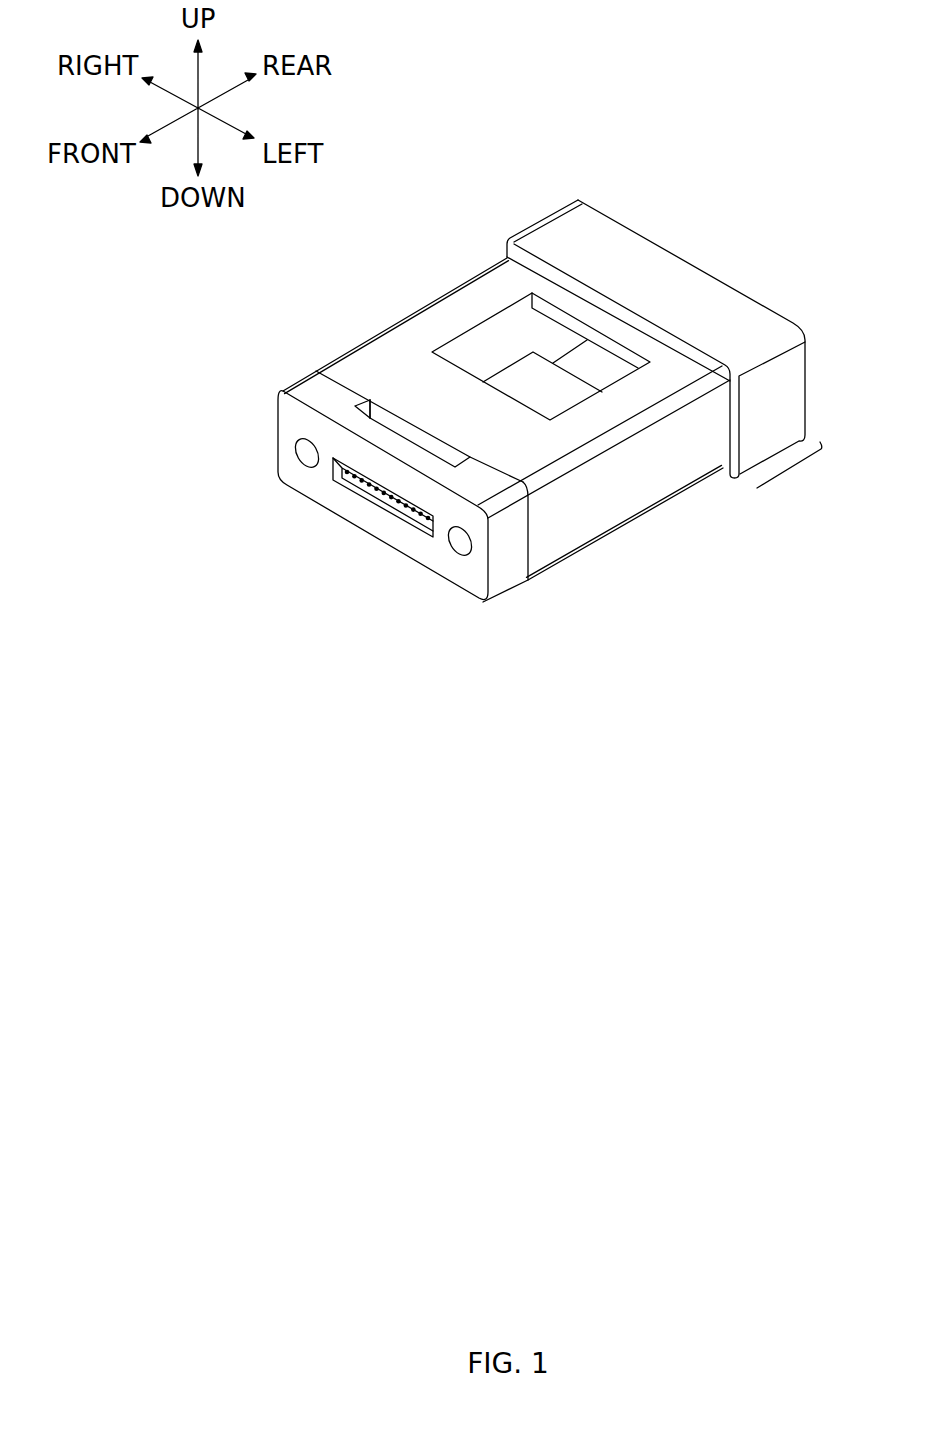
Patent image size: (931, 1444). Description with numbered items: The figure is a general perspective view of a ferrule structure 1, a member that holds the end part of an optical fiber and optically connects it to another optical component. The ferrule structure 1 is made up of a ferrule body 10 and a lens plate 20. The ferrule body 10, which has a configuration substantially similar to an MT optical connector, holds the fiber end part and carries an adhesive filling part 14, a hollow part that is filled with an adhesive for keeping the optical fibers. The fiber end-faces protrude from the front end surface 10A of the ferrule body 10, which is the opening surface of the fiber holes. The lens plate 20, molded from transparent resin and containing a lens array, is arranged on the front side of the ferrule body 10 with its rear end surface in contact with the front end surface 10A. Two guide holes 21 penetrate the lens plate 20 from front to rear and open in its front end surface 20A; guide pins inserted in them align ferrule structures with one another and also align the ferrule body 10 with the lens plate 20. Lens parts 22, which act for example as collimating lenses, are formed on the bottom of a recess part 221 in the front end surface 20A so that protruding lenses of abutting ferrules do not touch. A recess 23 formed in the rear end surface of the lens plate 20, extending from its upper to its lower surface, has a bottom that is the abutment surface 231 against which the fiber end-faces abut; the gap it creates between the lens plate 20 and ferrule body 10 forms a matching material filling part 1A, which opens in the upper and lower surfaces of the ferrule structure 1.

The ferrule structure 1 is at (401, 231).
The matching material filling part 1A is at (375, 400).
The ferrule body 10 is at (562, 593).
The front end surface of the ferrule body 10A is at (418, 431).
The adhesive filling part 14 is at (497, 326).
The lens plate 20 is at (560, 590).
The front end surface of the lens plate 20A is at (288, 422).
The guide hole 21 is at (301, 455).
The lens part 22 is at (375, 485).
The recess part 221 is at (337, 488).
The recess 23 is at (305, 357).
The abutment surface 231 is at (355, 405).